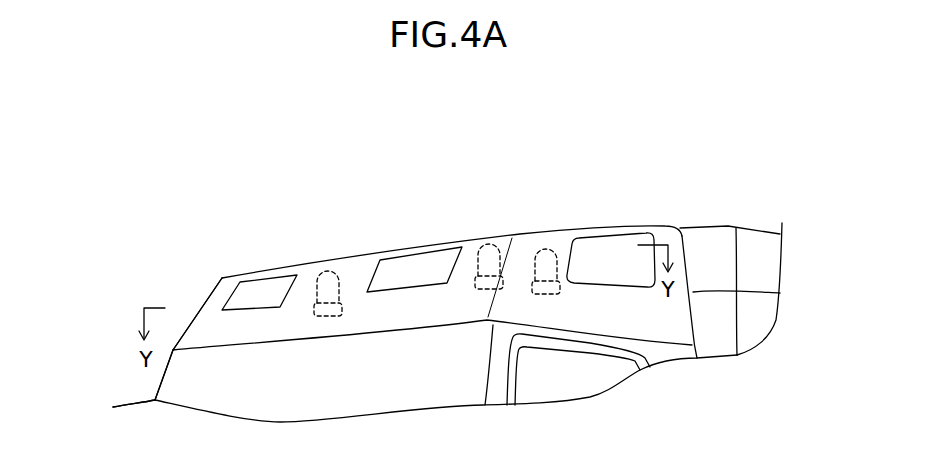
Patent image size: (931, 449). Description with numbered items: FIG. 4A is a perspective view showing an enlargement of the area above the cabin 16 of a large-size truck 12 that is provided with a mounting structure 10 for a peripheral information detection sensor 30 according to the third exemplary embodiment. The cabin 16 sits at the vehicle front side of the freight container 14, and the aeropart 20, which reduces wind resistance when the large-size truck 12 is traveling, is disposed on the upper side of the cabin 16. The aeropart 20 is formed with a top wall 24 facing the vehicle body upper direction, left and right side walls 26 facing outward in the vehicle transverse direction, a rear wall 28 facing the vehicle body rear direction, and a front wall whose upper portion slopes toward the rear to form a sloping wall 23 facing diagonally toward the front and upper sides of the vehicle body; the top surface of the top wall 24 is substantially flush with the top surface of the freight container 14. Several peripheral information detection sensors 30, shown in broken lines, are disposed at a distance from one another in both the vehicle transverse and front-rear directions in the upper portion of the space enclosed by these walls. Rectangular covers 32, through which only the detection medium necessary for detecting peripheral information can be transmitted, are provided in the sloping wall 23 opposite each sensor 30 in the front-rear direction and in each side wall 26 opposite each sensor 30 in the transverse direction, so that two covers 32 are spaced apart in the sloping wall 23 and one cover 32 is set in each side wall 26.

The mounting structure 10 is at (303, 237).
The large-size truck 12 is at (728, 214).
The freight container 14 is at (750, 245).
The cabin 16 is at (158, 383).
The aeropart 20 is at (221, 278).
The sloping wall 23 is at (213, 302).
The top wall 24 is at (372, 252).
The side walls 26 is at (668, 228).
The rear wall 28 is at (780, 293).
The peripheral information detection sensor 30 is at (335, 270).
The cover 32 is at (265, 290).